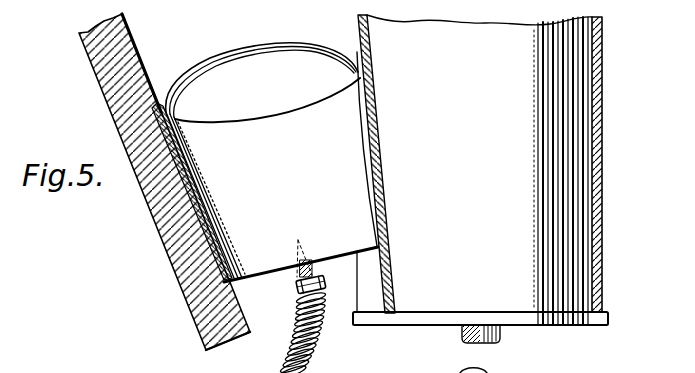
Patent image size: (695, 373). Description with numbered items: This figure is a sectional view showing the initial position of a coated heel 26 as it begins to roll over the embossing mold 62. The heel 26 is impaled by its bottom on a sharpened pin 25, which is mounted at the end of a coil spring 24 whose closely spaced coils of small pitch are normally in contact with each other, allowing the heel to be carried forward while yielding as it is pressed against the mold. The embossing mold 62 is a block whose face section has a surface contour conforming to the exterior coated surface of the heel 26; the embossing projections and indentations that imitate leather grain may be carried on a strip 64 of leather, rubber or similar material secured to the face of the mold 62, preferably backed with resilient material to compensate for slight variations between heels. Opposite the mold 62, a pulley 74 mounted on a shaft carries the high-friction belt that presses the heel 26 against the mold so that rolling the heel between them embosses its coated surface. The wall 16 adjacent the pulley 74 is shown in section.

The embossing mold 62 is at (101, 90).
The strip 64 is at (204, 209).
The heel 26 is at (242, 74).
The sharpened pin 25 is at (297, 280).
The coil spring 24 is at (282, 347).
The partition wall 16 is at (379, 144).
The pulley 74 is at (567, 147).